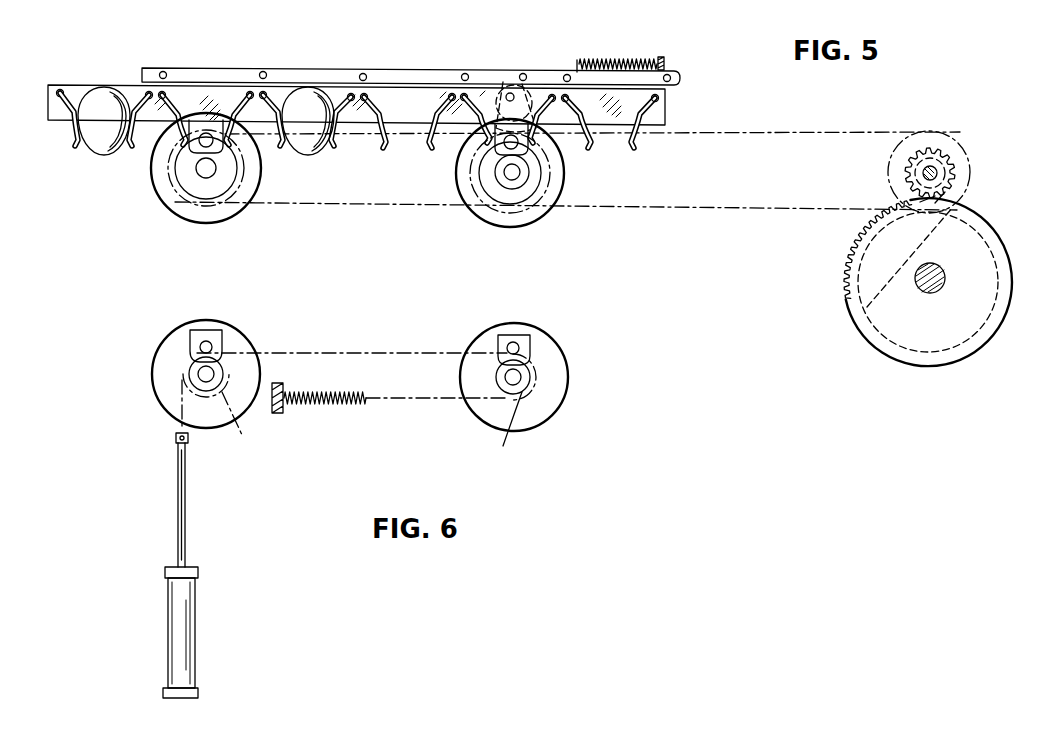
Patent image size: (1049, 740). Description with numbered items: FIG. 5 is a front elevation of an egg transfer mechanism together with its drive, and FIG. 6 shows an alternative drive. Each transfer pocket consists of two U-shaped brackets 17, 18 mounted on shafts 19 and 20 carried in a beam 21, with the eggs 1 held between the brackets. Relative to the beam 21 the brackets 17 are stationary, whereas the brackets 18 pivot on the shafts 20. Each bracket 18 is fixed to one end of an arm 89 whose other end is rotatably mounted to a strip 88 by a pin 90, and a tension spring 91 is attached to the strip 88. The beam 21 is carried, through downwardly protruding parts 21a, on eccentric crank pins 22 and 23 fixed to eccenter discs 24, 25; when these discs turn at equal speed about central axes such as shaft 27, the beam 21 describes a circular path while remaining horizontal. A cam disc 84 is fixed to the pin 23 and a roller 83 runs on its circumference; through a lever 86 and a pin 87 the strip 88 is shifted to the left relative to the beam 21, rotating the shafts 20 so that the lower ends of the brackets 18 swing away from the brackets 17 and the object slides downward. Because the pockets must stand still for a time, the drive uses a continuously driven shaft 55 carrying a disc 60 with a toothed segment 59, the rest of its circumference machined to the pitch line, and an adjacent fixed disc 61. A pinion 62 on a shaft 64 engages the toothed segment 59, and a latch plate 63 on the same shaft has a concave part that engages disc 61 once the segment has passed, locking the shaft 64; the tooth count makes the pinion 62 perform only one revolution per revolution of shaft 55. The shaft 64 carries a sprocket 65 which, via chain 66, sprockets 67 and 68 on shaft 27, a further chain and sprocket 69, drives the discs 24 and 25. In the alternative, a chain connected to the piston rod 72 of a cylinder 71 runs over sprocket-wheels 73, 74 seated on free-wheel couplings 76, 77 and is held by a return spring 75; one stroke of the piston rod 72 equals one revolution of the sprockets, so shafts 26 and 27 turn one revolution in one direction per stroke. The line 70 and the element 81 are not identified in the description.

In FIG. 5, the egg 1 is at (102, 157).
In FIG. 5, the U-shaped bracket 17 is at (72, 146).
In FIG. 5, the U-shaped bracket 18 is at (130, 149).
In FIG. 5, the shaft 19 is at (60, 89).
In FIG. 5, the shaft 20 is at (147, 92).
In FIG. 5, the beam 21 is at (73, 83).
In FIG. 5, the downwardly protruding parts 21a is at (190, 152).
In FIG. 6, the downwardly protruding parts 21a is at (218, 330).
In FIG. 5, the crank pin 22 is at (212, 140).
In FIG. 6, the crank pin 22 is at (203, 340).
In FIG. 6, the crank pin 23 is at (510, 342).
In FIG. 5, the eccenter disc 24 is at (245, 207).
In FIG. 6, the eccenter disc 24 is at (208, 428).
In FIG. 5, the eccenter disc 25 is at (515, 227).
In FIG. 6, the eccenter disc 25 is at (540, 427).
In FIG. 5, the shaft 26 is at (216, 168).
In FIG. 6, the shaft 26 is at (198, 372).
In FIG. 5, the shaft 27 is at (508, 180).
In FIG. 6, the shaft 27 is at (505, 377).
In FIG. 5, the shaft 55 is at (935, 293).
In FIG. 5, the toothed segment 59 is at (848, 255).
In FIG. 5, the disc 60 is at (895, 355).
In FIG. 5, the disc 61 is at (990, 335).
In FIG. 5, the pinion 62 is at (905, 172).
In FIG. 5, the latch plate 63 is at (950, 192).
In FIG. 5, the shaft 64 is at (930, 166).
In FIG. 5, the sprocket 65 is at (935, 133).
In FIG. 5, the chain 66 is at (707, 212).
In FIG. 5, the sprocket 67 is at (547, 187).
In FIG. 5, the sprocket 68 is at (543, 163).
In FIG. 5, the sprocket 69 is at (180, 200).
In FIG. 5, the axis line 70 is at (358, 204).
In FIG. 6, the cylinder 71 is at (200, 576).
In FIG. 6, the piston rod 72 is at (177, 436).
In FIG. 6, the sprocket-wheel 73 is at (240, 428).
In FIG. 6, the sprocket-wheel 74 is at (540, 368).
In FIG. 6, the return spring 75 is at (362, 403).
In FIG. 6, the free-wheel coupling 76 is at (224, 371).
In FIG. 6, the free-wheel coupling 77 is at (507, 430).
In FIG. 5, the lever 81 is at (538, 92).
In FIG. 5, the roller 83 is at (560, 132).
In FIG. 5, the cam disc 84 is at (485, 138).
In FIG. 5, the lever 86 is at (516, 80).
In FIG. 5, the pin 87 is at (523, 73).
In FIG. 5, the strip 88 is at (401, 68).
In FIG. 5, the arm 89 is at (672, 81).
In FIG. 5, the pin 90 is at (163, 71).
In FIG. 5, the tension spring 91 is at (625, 59).